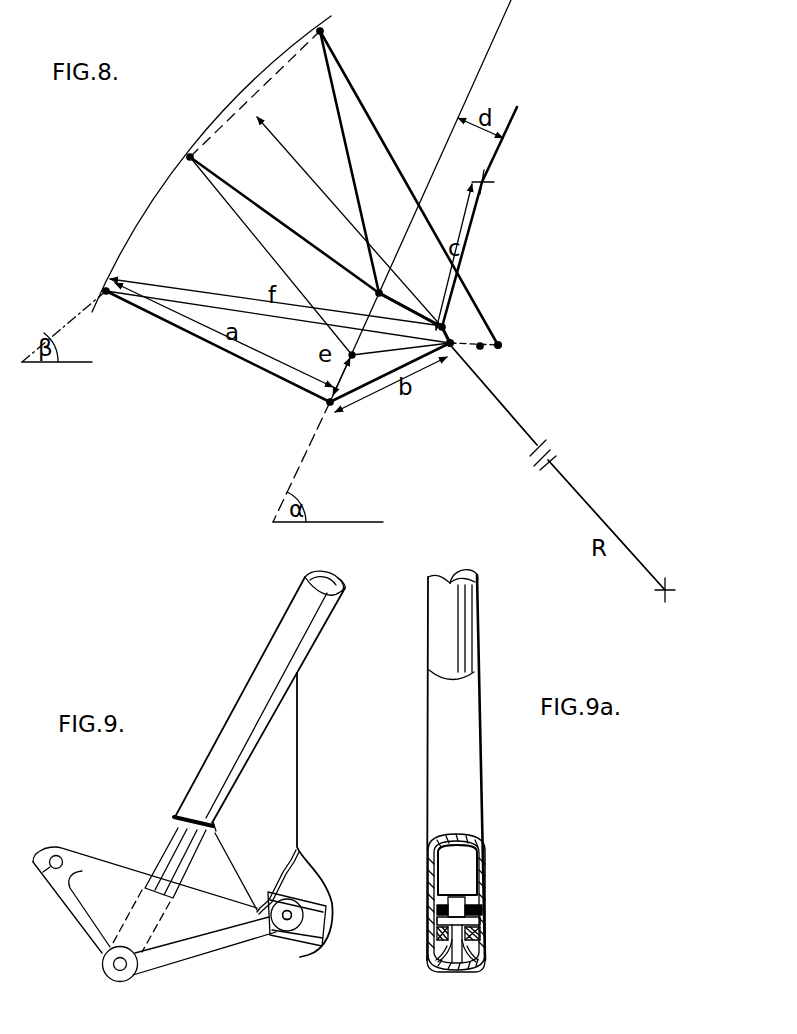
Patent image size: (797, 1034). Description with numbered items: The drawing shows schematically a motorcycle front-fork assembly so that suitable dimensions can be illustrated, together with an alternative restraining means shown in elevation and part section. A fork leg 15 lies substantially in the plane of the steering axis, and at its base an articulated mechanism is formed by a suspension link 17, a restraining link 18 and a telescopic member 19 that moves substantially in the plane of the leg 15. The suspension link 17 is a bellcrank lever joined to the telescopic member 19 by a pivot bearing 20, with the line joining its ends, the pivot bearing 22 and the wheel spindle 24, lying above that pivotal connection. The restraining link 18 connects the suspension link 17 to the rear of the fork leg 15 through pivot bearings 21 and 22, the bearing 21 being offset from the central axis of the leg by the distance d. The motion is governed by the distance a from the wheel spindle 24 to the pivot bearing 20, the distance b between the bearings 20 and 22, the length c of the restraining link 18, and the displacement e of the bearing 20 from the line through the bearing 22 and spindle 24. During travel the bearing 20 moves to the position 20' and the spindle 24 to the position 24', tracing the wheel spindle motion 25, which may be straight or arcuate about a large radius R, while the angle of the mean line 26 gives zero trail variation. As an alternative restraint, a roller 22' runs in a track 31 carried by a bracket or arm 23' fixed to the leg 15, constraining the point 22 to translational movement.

In FIG. 8, the fork leg 15 is at (492, 52).
In FIG. 9, the fork leg 15 is at (200, 765).
In FIG. 9a, the fork leg 15 is at (460, 662).
In FIG. 8, the suspension link 17 is at (264, 360).
In FIG. 8, the restraining link 18 is at (490, 226).
In FIG. 8, the telescopic member 19 is at (360, 395).
In FIG. 9, the telescopic member 19 is at (166, 853).
In FIG. 8, the pivot bearing 20 is at (363, 388).
In FIG. 9, the pivot bearing 20 is at (171, 964).
In FIG. 8, the displaced pivot bearing position 20' is at (384, 303).
In FIG. 8, the pivot bearing 21 is at (488, 178).
In FIG. 8, the pivot bearing 22 is at (470, 371).
In FIG. 9, the pivot bearing 22 is at (277, 948).
In FIG. 9a, the pivot bearing 22 is at (449, 974).
In FIG. 9, the roller 22' is at (310, 954).
In FIG. 9a, the roller 22' is at (483, 934).
In FIG. 9, the bracket or arm 23' is at (303, 815).
In FIG. 9a, the bracket or arm 23' is at (480, 873).
In FIG. 8, the wheel spindle 24 is at (249, 299).
In FIG. 9, the wheel spindle 24 is at (145, 873).
In FIG. 8, the displaced wheel spindle position 24' is at (407, 177).
In FIG. 8, the wheel spindle motion 25 is at (210, 128).
In FIG. 8, the mean line 26 is at (305, 43).
In FIG. 9, the track 31 is at (322, 915).
In FIG. 9a, the track 31 is at (478, 908).